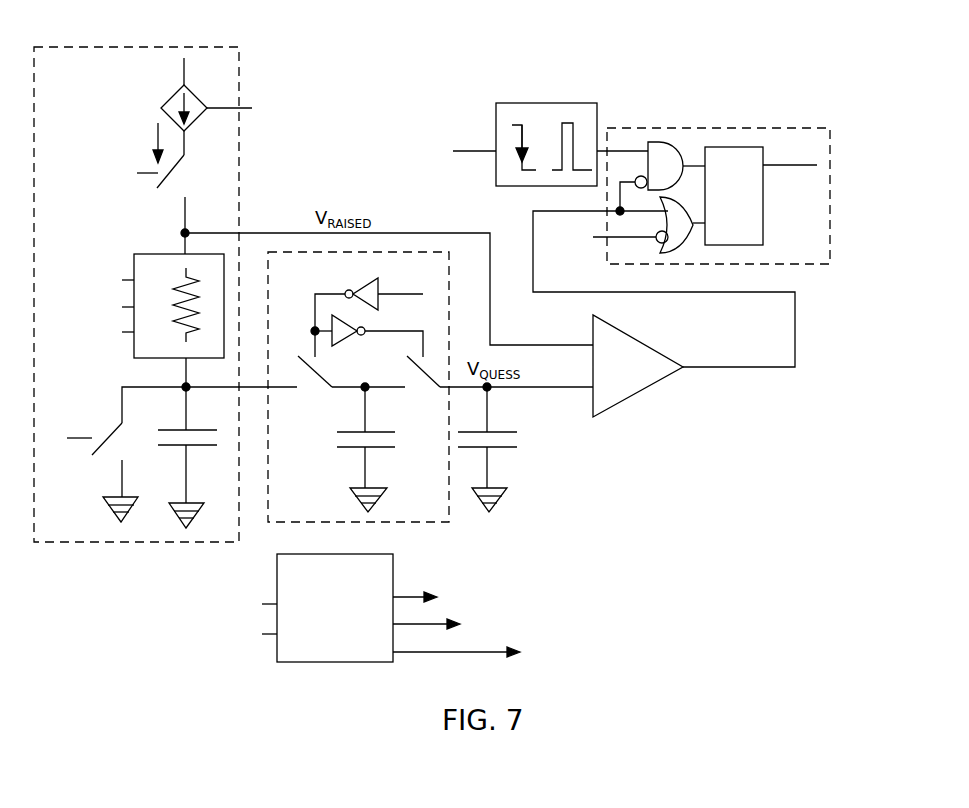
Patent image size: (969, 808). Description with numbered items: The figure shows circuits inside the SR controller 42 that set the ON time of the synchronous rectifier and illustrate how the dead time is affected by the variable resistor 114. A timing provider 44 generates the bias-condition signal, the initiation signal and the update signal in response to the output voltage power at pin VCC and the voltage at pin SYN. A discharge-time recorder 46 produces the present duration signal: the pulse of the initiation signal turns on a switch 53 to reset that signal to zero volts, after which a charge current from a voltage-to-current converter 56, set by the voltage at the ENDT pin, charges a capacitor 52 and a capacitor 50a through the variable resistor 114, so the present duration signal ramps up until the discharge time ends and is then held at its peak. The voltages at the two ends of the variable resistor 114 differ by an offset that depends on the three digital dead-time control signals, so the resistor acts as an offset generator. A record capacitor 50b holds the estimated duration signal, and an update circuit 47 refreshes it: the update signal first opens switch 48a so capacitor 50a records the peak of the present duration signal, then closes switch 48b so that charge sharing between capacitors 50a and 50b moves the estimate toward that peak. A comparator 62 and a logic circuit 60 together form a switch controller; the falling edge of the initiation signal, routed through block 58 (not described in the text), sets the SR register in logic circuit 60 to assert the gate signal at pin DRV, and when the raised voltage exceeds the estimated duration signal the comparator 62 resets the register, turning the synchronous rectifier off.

The SR controller 42 is at (362, 106).
The timing provider 44 is at (344, 647).
The discharge-time recorder 46 is at (239, 198).
The update circuit 47 is at (311, 277).
The switch 48a is at (295, 386).
The switch 48b is at (500, 386).
The capacitor 50a is at (355, 449).
The record capacitor 50b is at (506, 449).
The capacitor 52 is at (190, 457).
The switch 53 is at (117, 454).
The voltage-to-current converter 56 is at (195, 94).
The pulse generator 58 is at (598, 117).
The logic circuit 60 is at (702, 128).
The comparator 62 is at (635, 396).
The variable resistor 114 is at (173, 275).